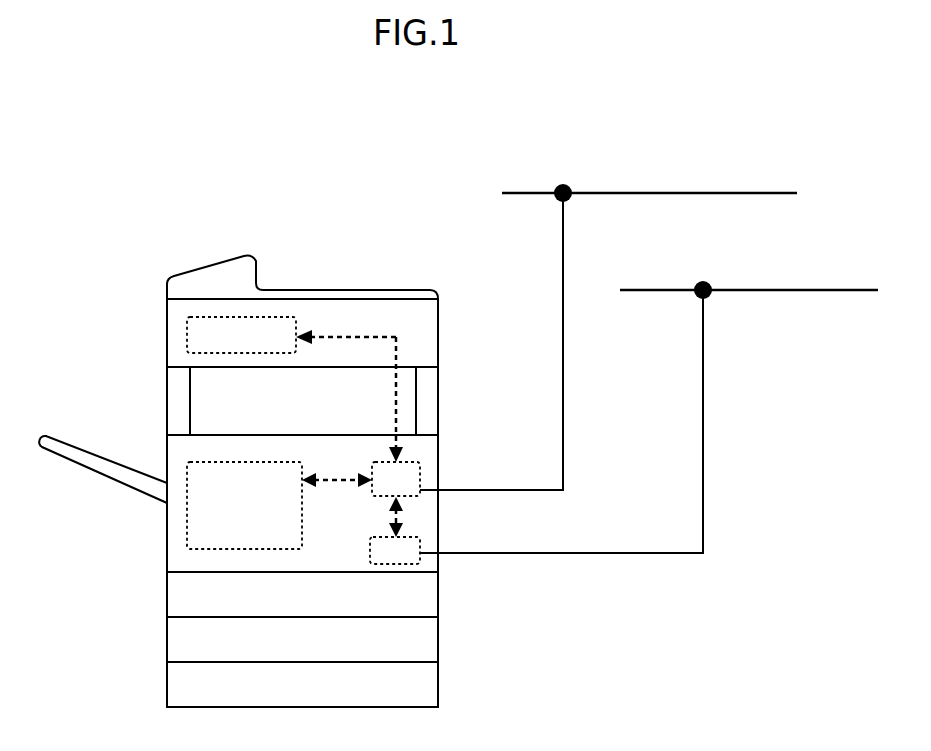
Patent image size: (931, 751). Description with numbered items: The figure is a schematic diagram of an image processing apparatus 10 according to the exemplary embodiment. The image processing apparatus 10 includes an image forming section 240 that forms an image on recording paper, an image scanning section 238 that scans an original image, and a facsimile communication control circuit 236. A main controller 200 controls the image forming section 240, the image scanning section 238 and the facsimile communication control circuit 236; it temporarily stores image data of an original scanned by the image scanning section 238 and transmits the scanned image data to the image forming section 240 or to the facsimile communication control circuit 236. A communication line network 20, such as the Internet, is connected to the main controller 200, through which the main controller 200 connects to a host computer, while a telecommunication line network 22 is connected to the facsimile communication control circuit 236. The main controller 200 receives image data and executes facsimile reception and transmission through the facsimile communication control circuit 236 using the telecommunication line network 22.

The image processing apparatus 10 is at (174, 228).
The communication line network 20 is at (563, 237).
The telecommunication line network 22 is at (703, 328).
The main controller 200 is at (420, 468).
The facsimile communication control circuit 236 is at (420, 564).
The image scanning section 238 is at (187, 342).
The image forming section 240 is at (192, 549).